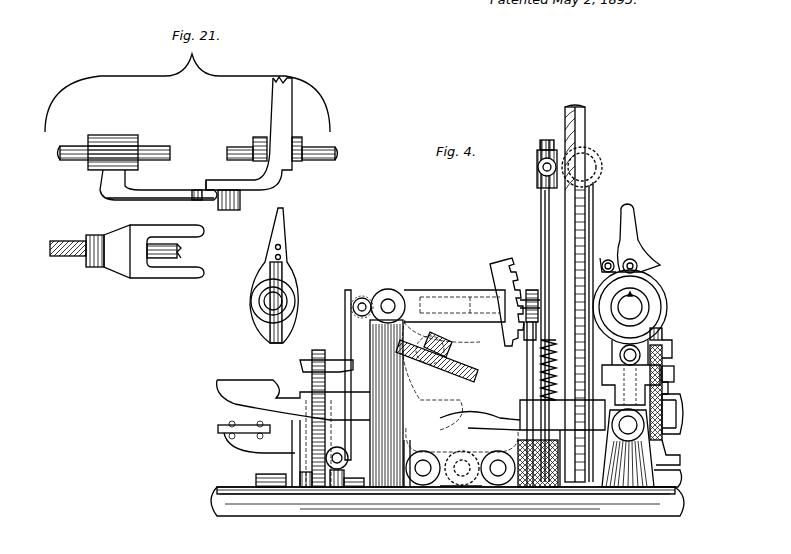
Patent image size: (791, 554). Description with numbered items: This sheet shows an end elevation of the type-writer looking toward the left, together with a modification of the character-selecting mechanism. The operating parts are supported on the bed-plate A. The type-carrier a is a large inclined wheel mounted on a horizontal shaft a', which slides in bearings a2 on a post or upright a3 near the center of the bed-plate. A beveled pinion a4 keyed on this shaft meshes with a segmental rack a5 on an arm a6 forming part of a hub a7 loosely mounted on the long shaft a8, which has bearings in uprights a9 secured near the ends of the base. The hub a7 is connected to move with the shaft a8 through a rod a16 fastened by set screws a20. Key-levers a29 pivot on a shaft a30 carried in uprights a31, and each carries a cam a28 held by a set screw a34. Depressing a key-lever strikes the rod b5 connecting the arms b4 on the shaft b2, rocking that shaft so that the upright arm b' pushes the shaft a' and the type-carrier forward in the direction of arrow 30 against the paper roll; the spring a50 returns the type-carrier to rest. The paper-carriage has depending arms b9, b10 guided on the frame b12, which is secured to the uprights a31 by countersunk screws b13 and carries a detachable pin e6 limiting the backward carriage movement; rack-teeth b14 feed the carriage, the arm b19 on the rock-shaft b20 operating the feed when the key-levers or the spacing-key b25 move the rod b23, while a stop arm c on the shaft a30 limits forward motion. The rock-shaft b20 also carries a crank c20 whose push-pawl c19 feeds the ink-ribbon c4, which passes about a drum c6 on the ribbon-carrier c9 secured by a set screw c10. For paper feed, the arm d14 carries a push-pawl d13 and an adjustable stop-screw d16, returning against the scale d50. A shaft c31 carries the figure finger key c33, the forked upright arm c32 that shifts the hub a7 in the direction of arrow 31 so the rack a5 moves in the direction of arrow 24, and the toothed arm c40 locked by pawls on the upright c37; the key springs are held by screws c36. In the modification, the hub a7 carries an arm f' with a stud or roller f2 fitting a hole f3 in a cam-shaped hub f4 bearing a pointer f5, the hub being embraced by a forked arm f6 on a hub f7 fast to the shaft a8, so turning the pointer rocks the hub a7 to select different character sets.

In FIG. 21, the shaft a8 is at (62, 150).
In FIG. 4, the shaft a8 is at (386, 300).
In FIG. 21, the hub f7 is at (116, 136).
In FIG. 21, the forked arm f6 is at (182, 188).
In FIG. 21, the arm a6 is at (272, 112).
In FIG. 4, the arm a6 is at (456, 290).
In FIG. 21, the hub a7 is at (256, 140).
In FIG. 21, the arm f' is at (235, 197).
In FIG. 21, the stud or roller f2 is at (230, 212).
In FIG. 21, the handle or pointer f5 is at (286, 236).
In FIG. 21, the cam-shaped hub f4 is at (252, 302).
In FIG. 21, the hole or opening f3 is at (288, 304).
In FIG. 4, the bed-plate A is at (672, 496).
In FIG. 4, the type-carrier a is at (565, 286).
In FIG. 4, the ink-ribbon c4 is at (594, 196).
In FIG. 4, the ribbon-carrier c9 is at (540, 200).
In FIG. 4, the set screw c10 is at (538, 168).
In FIG. 4, the drum c6 is at (598, 156).
In FIG. 4, the push-pawl d13 is at (648, 270).
In FIG. 4, the arm d14 is at (630, 228).
In FIG. 4, the scale d50 is at (606, 262).
In FIG. 4, the stop-screw d16 is at (664, 326).
In FIG. 4, the upright arm b' is at (554, 300).
In FIG. 4, the depending arm b9 is at (610, 354).
In FIG. 4, the pin or projection e6 is at (660, 346).
In FIG. 4, the depending arm b10 is at (668, 346).
In FIG. 4, the rack-teeth b14 is at (670, 372).
In FIG. 4, the bar or frame b12 is at (664, 394).
In FIG. 4, the arm c is at (684, 408).
In FIG. 4, the countersunk screw b13 is at (612, 400).
In FIG. 4, the shaft a30 is at (646, 426).
In FIG. 4, the upright a31 is at (630, 494).
In FIG. 4, the arm b19 is at (672, 480).
In FIG. 4, the set screw a20 is at (362, 296).
In FIG. 4, the arrow 31 is at (387, 287).
In FIG. 4, the arrow 30 is at (442, 243).
In FIG. 4, the arrow 24 is at (475, 266).
In FIG. 4, the upright arm c32 is at (350, 322).
In FIG. 4, the rod a16 is at (372, 322).
In FIG. 4, the segmental gear or rack a5 is at (496, 262).
In FIG. 4, the bearing a2 is at (528, 290).
In FIG. 4, the shaft a' is at (474, 396).
In FIG. 4, the beveled pinion or gear a4 is at (528, 322).
In FIG. 4, the post or upright a3 is at (528, 350).
In FIG. 4, the cam a28 is at (478, 366).
In FIG. 4, the set screw a34 is at (432, 370).
In FIG. 4, the spring a50 is at (544, 384).
In FIG. 4, the push-pawl c19 is at (480, 412).
In FIG. 4, the crank or arm c20 is at (450, 440).
In FIG. 4, the shaft b2 is at (426, 478).
In FIG. 4, the rock-shaft b20 is at (462, 478).
In FIG. 4, the rearwardly projecting arm b4 is at (482, 486).
In FIG. 4, the rod b5 is at (500, 478).
In FIG. 4, the key-lever a29 is at (280, 388).
In FIG. 4, the spacing-key b25 is at (218, 428).
In FIG. 4, the arm or upright c37 is at (326, 438).
In FIG. 4, the finger key c33 is at (296, 428).
In FIG. 4, the screw c36 is at (310, 430).
In FIG. 4, the upright or arm c40 is at (312, 456).
In FIG. 4, the shaft c31 is at (340, 470).
In FIG. 4, the rod b23 is at (338, 470).
In FIG. 4, the upright a9 is at (392, 470).